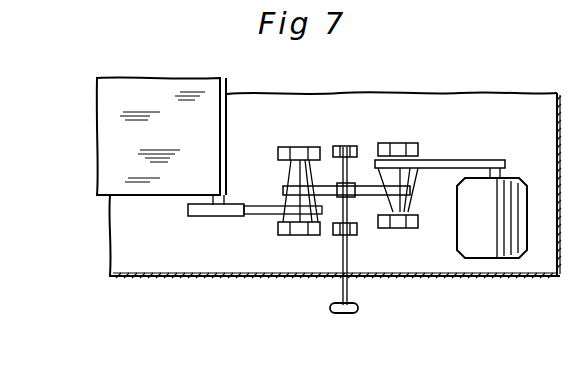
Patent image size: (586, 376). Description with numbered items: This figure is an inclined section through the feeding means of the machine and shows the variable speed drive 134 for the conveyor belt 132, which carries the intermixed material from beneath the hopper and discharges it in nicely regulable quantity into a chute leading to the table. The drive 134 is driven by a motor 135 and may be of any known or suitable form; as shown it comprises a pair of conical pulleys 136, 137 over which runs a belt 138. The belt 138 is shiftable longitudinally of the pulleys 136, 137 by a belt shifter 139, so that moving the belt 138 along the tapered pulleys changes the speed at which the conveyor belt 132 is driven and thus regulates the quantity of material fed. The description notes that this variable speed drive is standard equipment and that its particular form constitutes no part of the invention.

The variable speed conveyor belt 132 is at (115, 126).
The variable speed drive 134 is at (350, 208).
The motor 135 is at (513, 205).
The conical pulley 136 is at (300, 175).
The conical pulley 137 is at (408, 177).
The belt 138 is at (371, 190).
The belt shifter 139 is at (350, 295).